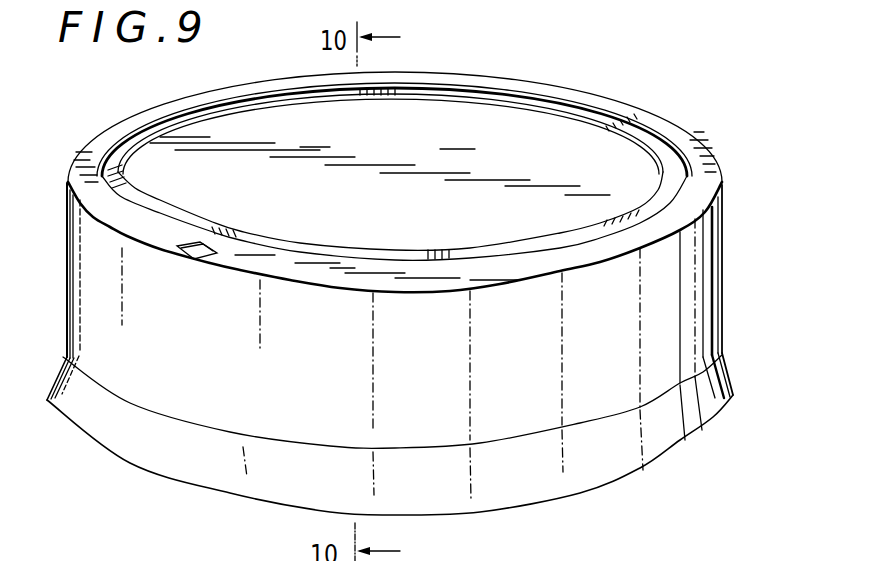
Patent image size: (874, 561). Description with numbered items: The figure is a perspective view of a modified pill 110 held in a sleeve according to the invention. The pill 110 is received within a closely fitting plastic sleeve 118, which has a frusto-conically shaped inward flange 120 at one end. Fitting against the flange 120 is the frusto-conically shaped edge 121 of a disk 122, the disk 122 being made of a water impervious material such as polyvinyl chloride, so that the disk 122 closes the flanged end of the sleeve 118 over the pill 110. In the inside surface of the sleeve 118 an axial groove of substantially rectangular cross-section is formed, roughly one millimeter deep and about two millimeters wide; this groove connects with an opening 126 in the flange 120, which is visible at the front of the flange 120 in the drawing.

The pill 110 is at (681, 113).
The plastic sleeve 118 is at (718, 297).
The inward flange 120 is at (146, 113).
The edge 121 is at (672, 172).
The disk 122 is at (507, 128).
The opening 126 is at (192, 246).